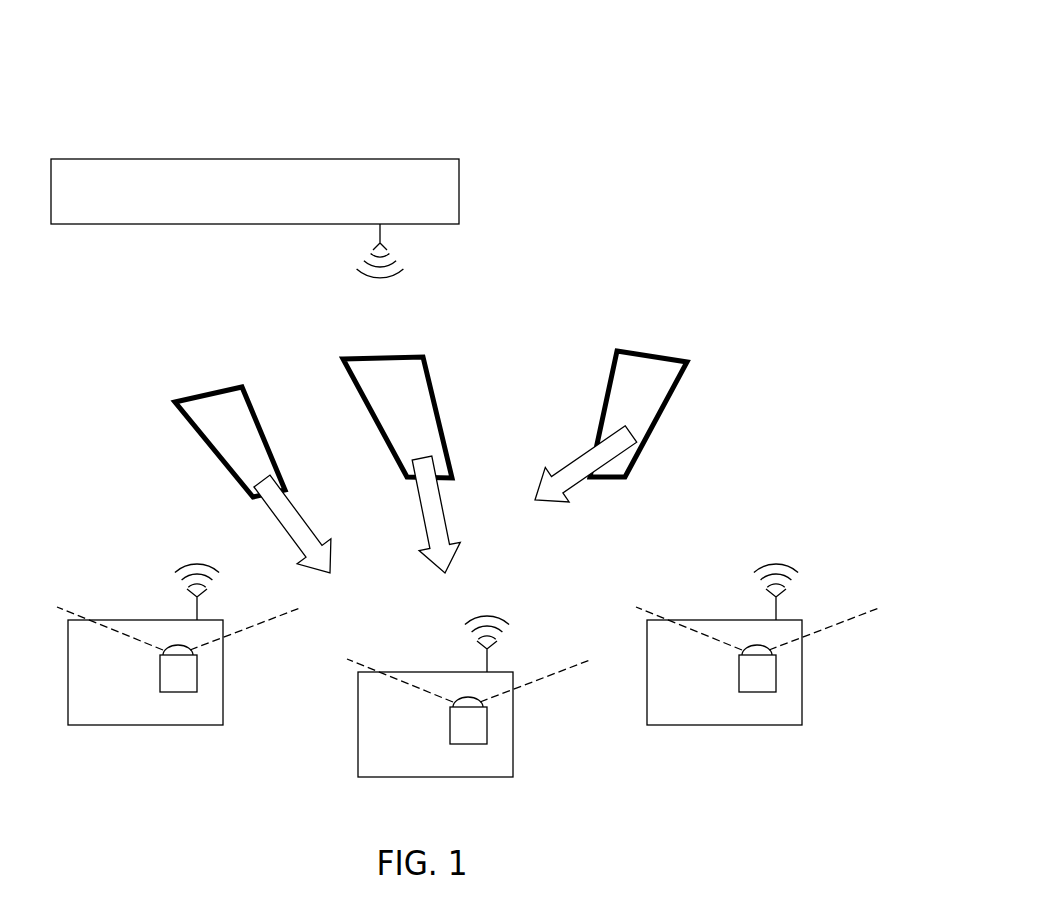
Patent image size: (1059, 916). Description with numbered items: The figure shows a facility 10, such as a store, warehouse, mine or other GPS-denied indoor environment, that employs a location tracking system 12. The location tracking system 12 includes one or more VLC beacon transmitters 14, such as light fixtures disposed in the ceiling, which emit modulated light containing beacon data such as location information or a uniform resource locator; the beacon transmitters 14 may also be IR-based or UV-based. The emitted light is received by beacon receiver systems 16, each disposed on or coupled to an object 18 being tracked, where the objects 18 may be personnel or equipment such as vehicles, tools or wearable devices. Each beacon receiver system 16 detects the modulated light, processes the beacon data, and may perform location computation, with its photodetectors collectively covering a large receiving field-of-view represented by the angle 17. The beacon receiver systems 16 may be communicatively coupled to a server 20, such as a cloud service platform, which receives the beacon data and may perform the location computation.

The facility 10 is at (632, 72).
The location tracking system 12 is at (538, 233).
The beacon transmitter 14 is at (202, 378).
The beacon receiver system 16 is at (160, 673).
The angle 17 is at (177, 645).
The object 18 is at (110, 620).
The server 20 is at (253, 159).